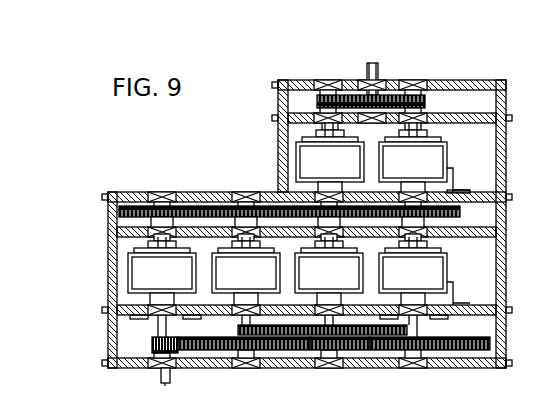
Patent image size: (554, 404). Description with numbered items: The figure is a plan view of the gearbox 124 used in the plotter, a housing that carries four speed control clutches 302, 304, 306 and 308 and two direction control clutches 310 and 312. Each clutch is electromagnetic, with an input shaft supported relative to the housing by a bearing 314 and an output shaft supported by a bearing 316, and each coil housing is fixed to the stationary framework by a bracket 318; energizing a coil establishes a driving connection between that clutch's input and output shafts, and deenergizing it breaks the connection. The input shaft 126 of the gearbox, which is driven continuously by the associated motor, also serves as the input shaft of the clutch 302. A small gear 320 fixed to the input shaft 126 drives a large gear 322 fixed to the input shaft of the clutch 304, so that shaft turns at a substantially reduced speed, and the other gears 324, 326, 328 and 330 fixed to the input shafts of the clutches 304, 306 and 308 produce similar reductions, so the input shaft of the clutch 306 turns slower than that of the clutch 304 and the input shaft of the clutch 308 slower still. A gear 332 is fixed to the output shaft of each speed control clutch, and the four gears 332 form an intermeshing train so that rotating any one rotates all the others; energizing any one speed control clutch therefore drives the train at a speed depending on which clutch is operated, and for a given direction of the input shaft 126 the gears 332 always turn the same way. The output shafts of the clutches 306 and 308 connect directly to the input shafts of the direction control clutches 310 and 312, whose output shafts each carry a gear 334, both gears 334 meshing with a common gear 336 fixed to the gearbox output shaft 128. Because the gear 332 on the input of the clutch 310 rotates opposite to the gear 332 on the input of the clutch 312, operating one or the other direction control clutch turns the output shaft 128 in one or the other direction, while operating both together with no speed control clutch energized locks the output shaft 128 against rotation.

The gearbox 124 is at (170, 165).
The input shaft 126 is at (170, 375).
The gearbox output shaft 128 is at (376, 70).
The speed control clutch 302 is at (162, 269).
The speed control clutch 304 is at (246, 269).
The speed control clutch 306 is at (329, 269).
The speed control clutch 308 is at (413, 269).
The direction control clutch 310 is at (330, 158).
The direction control clutch 312 is at (413, 158).
The bearing 314 is at (462, 192).
The bearing 316 is at (286, 104).
The bracket 318 is at (454, 170).
The small gear 320 is at (152, 346).
The large gear 322 is at (244, 356).
The gear 324 is at (250, 328).
The gear 326 is at (286, 351).
The gear 328 is at (328, 351).
The gear 330 is at (507, 270).
The gear 332 is at (190, 205).
The gear 334 is at (324, 97).
The common gear 336 is at (344, 95).